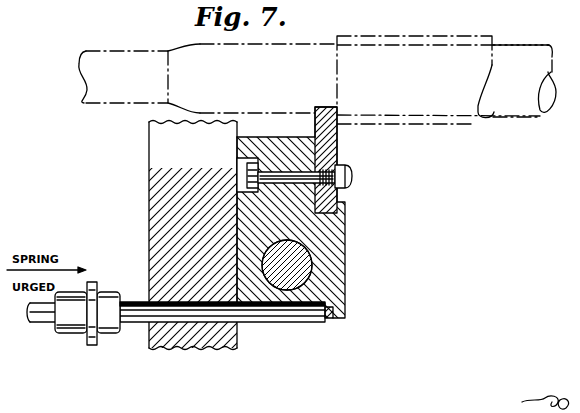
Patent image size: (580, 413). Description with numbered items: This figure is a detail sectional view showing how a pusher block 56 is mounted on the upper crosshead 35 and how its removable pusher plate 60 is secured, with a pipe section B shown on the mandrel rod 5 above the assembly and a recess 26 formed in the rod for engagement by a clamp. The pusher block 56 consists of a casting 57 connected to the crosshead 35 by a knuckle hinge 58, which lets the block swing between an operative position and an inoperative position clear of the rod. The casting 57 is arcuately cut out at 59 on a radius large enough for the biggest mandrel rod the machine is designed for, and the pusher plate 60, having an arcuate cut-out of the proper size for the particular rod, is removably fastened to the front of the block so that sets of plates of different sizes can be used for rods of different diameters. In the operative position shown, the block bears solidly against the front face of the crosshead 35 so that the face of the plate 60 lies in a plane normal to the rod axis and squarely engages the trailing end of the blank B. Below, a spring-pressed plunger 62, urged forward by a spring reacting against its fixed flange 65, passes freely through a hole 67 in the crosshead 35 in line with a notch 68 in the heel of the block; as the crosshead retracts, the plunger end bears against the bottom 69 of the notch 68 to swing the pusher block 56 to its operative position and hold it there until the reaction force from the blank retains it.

The mandrel rod 5 is at (540, 117).
The pipe section B is at (473, 120).
The recess 26 is at (112, 104).
The crosshead 35 is at (148, 192).
The pusher block 56 is at (364, 195).
The casting 57 is at (335, 263).
The knuckle hinge 58 is at (299, 253).
The arcuate cut-out 59 is at (277, 133).
The pusher plate 60 is at (330, 144).
The spring-pressed plunger 62 is at (248, 326).
The flange 65 is at (93, 282).
The hole 67 is at (190, 324).
The notch 68 is at (318, 299).
The bottom 69 is at (333, 320).